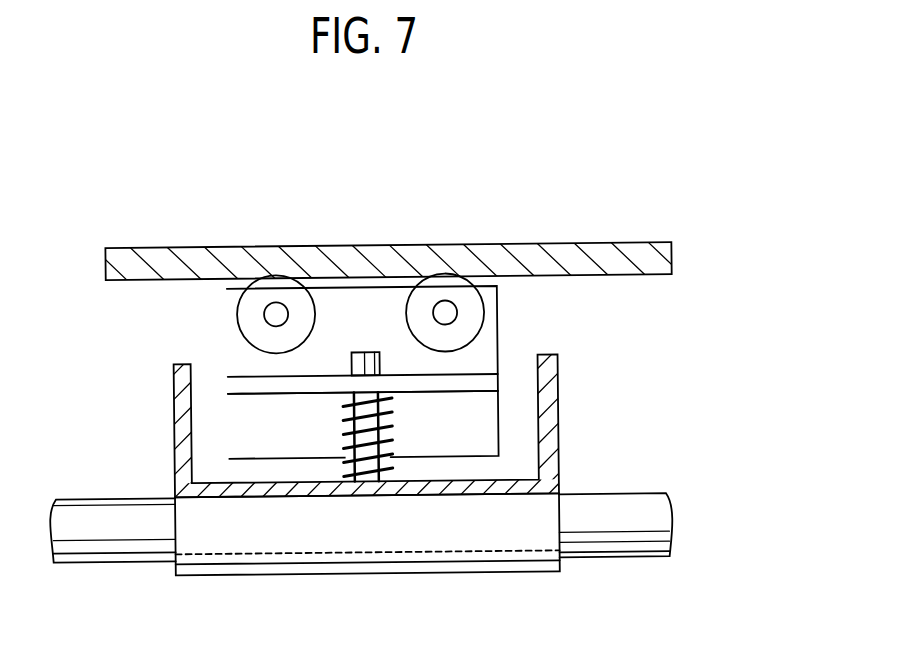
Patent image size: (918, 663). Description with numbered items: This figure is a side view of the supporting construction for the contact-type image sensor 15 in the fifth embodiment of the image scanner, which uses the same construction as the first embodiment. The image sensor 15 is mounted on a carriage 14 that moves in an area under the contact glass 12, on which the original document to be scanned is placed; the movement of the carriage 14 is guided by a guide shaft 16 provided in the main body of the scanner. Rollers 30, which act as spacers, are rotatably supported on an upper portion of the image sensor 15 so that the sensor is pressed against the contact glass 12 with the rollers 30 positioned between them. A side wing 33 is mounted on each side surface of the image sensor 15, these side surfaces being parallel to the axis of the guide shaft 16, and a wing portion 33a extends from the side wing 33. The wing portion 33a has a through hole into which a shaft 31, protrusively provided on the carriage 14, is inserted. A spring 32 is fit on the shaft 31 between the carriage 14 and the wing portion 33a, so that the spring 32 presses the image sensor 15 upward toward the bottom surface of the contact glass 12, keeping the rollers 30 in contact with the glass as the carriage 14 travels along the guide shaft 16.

The contact glass 12 is at (417, 255).
The carriage 14 is at (550, 413).
The contact-type image sensor 15 is at (457, 459).
The guide shaft 16 is at (623, 517).
The rollers 30 is at (257, 310).
The shaft 31 is at (377, 402).
The spring 32 is at (365, 481).
The side wing 33 is at (482, 357).
The wing portion 33a is at (288, 383).